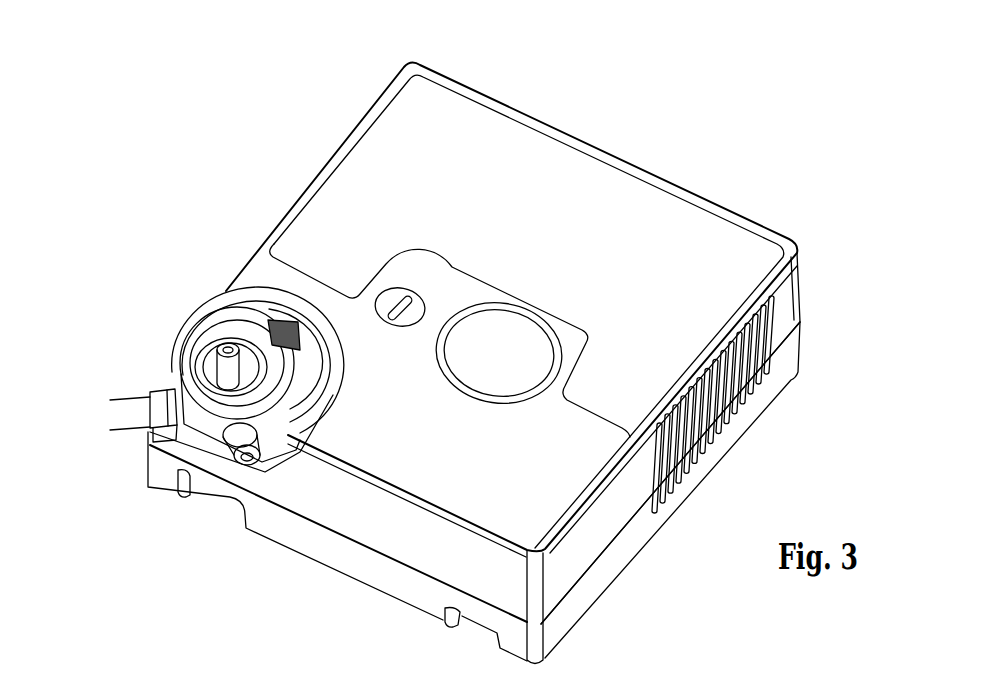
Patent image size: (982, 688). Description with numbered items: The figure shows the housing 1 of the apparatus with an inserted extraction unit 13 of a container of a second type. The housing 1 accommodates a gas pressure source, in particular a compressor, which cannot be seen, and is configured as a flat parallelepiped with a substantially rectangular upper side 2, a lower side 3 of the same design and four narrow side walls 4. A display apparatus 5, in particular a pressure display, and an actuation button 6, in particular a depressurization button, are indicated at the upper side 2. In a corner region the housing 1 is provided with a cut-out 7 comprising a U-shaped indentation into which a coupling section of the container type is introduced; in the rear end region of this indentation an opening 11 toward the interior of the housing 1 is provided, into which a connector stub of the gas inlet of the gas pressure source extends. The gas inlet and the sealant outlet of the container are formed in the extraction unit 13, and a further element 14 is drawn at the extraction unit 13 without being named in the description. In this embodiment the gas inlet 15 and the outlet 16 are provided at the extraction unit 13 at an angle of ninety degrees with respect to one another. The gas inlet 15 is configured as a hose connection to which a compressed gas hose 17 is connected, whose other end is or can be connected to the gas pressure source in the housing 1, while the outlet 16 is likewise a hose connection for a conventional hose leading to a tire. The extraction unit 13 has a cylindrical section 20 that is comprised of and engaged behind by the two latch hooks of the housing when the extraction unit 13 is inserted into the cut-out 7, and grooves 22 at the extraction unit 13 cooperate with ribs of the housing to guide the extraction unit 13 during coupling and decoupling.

The housing 1 is at (370, 198).
The upper side 2 is at (527, 213).
The lower side 3 is at (604, 590).
The side walls 4 is at (356, 103).
The display apparatus 5 is at (525, 355).
The actuation button 6 is at (418, 306).
The cut-out 7 is at (352, 395).
The opening 11 is at (292, 330).
The extraction unit 13 is at (204, 427).
The shaft hub 14 is at (204, 352).
The gas inlet 15 is at (162, 405).
The outlet 16 is at (262, 443).
The compressed gas hose 17 is at (127, 413).
The cylindrical section 20 is at (255, 408).
The grooves 22 is at (270, 440).